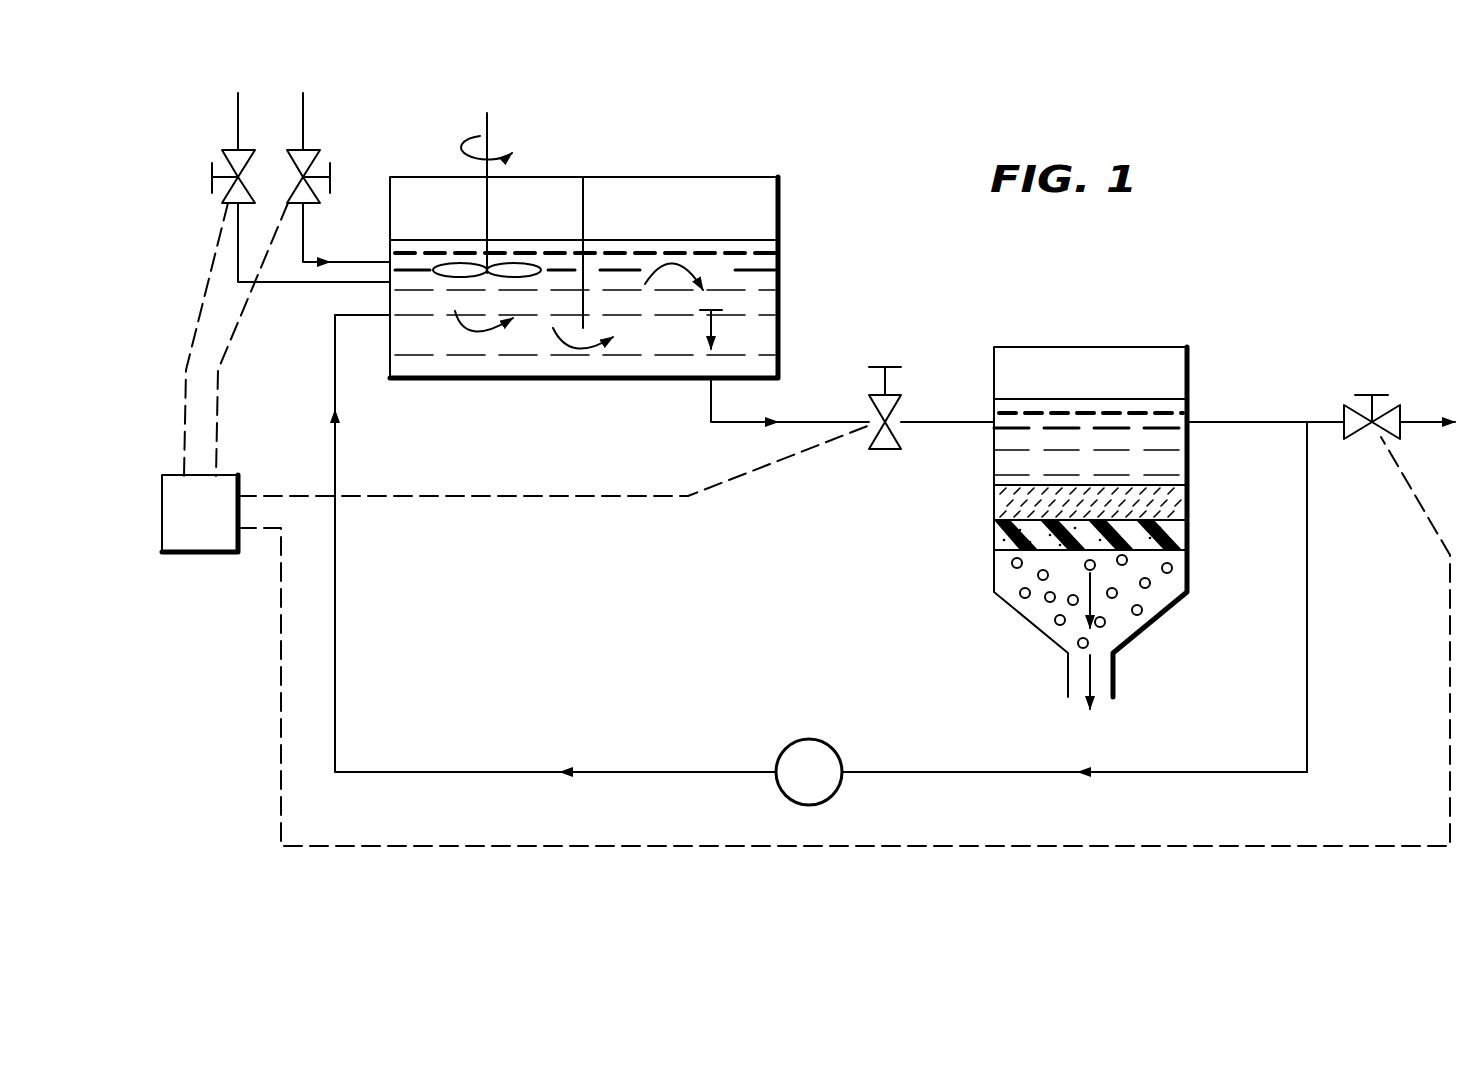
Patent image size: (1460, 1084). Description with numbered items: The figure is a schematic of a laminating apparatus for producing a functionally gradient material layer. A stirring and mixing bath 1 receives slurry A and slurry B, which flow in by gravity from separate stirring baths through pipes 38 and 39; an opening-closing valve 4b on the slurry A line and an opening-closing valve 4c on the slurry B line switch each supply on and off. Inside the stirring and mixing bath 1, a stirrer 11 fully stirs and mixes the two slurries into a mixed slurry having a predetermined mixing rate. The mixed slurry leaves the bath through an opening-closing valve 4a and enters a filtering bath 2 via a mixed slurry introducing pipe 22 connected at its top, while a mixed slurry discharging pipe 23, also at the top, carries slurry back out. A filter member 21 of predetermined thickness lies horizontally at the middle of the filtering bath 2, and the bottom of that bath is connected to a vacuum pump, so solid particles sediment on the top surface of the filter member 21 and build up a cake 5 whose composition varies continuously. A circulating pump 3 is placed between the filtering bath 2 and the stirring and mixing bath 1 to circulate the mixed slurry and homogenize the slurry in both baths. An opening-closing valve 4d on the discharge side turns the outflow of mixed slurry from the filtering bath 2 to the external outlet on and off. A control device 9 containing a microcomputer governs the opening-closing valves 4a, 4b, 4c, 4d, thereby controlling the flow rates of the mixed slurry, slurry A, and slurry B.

The stirring and mixing bath 1 is at (738, 168).
The filtering bath 2 is at (1185, 338).
The circulating pump 3 is at (796, 746).
The opening-closing valve 4a is at (888, 362).
The opening-closing valve 4b is at (226, 201).
The opening-closing valve 4c is at (320, 158).
The opening-closing valve 4d is at (1398, 410).
The cake 5 is at (1003, 503).
The control device 9 is at (182, 542).
The stirrer 11 is at (487, 213).
The filter member 21 is at (1000, 537).
The mixed slurry introducing pipe 22 is at (947, 418).
The mixed slurry discharging pipe 23 is at (1253, 420).
The pipe 38 is at (238, 113).
The pipe 39 is at (305, 113).